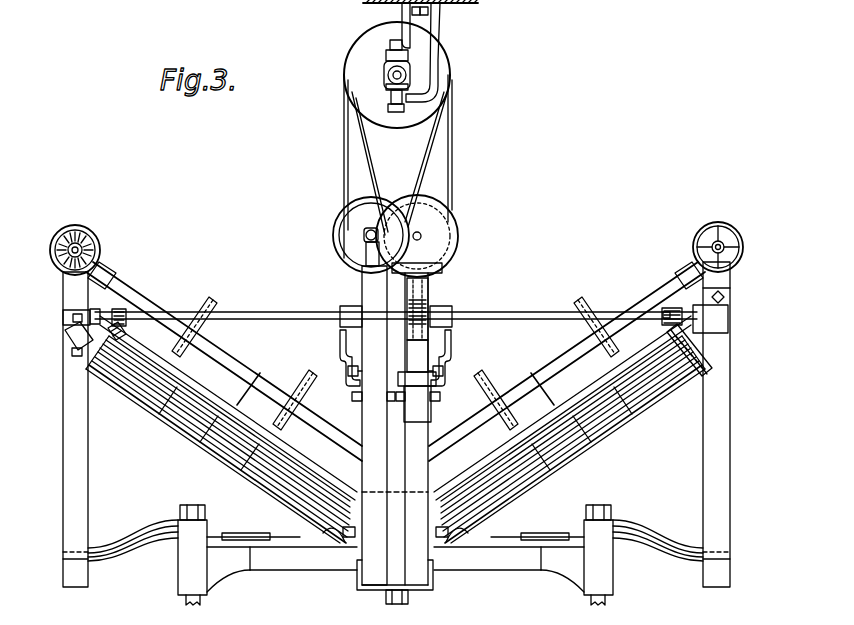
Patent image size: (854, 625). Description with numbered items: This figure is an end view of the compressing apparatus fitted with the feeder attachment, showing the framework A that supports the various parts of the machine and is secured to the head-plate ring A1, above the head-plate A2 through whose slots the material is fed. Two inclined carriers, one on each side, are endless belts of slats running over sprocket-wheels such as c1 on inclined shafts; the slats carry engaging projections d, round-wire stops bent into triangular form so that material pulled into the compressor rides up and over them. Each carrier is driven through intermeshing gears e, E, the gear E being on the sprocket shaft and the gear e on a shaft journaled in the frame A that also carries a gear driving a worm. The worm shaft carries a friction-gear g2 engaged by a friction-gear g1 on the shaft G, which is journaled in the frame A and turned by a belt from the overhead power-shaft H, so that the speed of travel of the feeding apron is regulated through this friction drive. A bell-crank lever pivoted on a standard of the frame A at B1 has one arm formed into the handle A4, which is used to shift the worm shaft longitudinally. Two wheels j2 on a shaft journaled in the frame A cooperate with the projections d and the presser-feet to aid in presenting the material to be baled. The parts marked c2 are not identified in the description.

The power-shaft H is at (392, 76).
The friction-gear g1 is at (484, 232).
The shaft G is at (364, 237).
The friction-gear g2 is at (468, 276).
The framework A is at (750, 392).
The sprocket-wheel c1 is at (566, 313).
The adjusting brackets / threaded sleeve c2 is at (480, 298).
The handle A4 is at (472, 342).
The pivot B1 is at (466, 373).
The gear E is at (64, 314).
The gear e is at (122, 297).
The engaging projections d is at (166, 440).
The wheels j2 is at (202, 303).
The head-plate A2 is at (558, 506).
The head-plate ring A1 is at (504, 570).